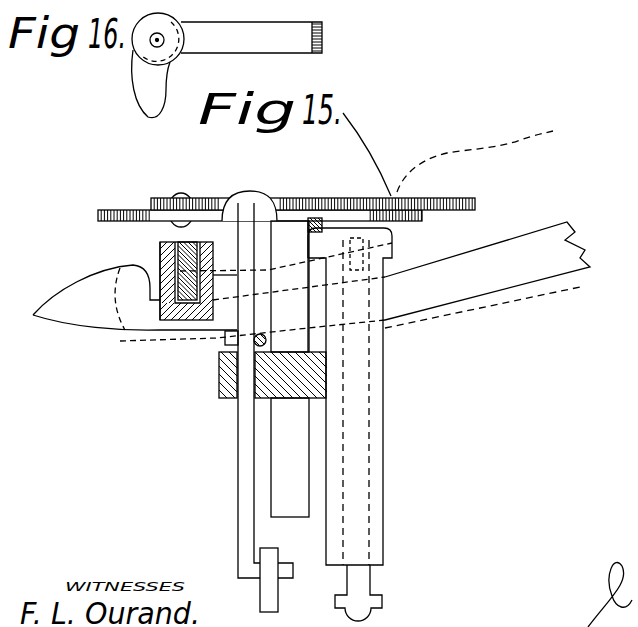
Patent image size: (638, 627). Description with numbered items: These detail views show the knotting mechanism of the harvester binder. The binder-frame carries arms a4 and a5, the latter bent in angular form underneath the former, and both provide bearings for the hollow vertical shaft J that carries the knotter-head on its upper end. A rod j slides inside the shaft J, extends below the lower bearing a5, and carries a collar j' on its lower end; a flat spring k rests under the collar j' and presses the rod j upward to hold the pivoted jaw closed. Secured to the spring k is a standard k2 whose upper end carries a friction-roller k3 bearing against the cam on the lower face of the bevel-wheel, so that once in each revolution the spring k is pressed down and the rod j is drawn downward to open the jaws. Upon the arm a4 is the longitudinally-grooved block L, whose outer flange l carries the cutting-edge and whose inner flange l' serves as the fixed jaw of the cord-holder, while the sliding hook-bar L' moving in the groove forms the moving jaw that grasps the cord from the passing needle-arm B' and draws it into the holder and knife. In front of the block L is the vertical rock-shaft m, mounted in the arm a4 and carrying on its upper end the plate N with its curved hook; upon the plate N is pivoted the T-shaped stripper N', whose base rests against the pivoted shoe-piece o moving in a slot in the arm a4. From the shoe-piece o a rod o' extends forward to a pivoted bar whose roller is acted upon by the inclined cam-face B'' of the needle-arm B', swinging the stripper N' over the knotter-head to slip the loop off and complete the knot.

In FIG. 16, the flat spring k is at (232, 32).
In FIG. 16, the standard k2 is at (251, 37).
In FIG. 16, the friction-roller k3 is at (131, 43).
In FIG. 15, the plate N is at (274, 224).
In FIG. 15, the T-shaped stripper N' is at (352, 170).
In FIG. 15, the pivoted shoe-piece o is at (257, 374).
In FIG. 15, the rod o' is at (261, 329).
In FIG. 15, the outer flange l is at (200, 271).
In FIG. 15, the inner flange l' is at (150, 281).
In FIG. 15, the longitudinally-grooved block L is at (170, 314).
In FIG. 15, the sliding hook-bar L' is at (181, 314).
In FIG. 15, the inclined cam-face B'' is at (212, 292).
In FIG. 15, the needle-arm B' is at (487, 275).
In FIG. 15, the rod j is at (371, 401).
In FIG. 15, the vertical shaft J is at (376, 428).
In FIG. 15, the collar j' is at (375, 590).
In FIG. 15, the arm a4 is at (287, 392).
In FIG. 15, the arm a5 is at (257, 580).
In FIG. 15, the vertical rock-shaft m is at (290, 369).